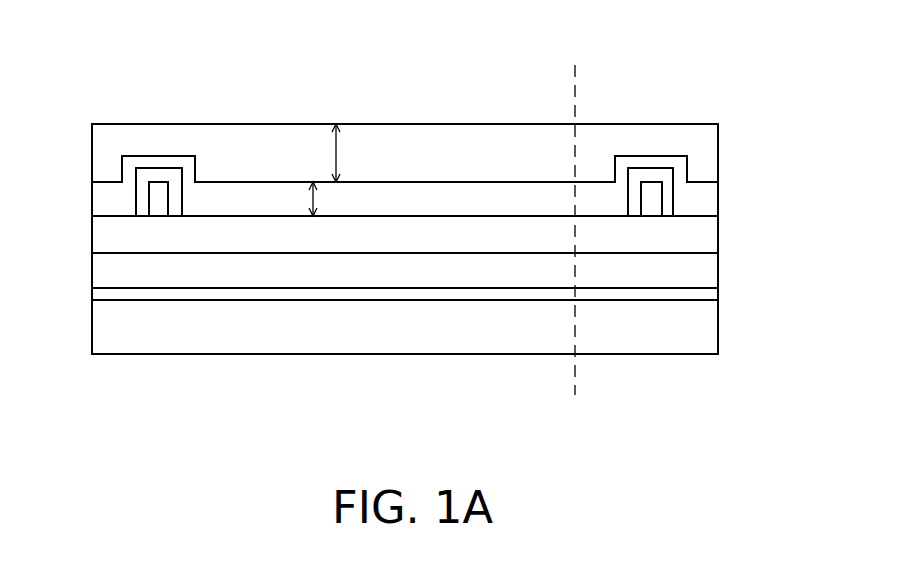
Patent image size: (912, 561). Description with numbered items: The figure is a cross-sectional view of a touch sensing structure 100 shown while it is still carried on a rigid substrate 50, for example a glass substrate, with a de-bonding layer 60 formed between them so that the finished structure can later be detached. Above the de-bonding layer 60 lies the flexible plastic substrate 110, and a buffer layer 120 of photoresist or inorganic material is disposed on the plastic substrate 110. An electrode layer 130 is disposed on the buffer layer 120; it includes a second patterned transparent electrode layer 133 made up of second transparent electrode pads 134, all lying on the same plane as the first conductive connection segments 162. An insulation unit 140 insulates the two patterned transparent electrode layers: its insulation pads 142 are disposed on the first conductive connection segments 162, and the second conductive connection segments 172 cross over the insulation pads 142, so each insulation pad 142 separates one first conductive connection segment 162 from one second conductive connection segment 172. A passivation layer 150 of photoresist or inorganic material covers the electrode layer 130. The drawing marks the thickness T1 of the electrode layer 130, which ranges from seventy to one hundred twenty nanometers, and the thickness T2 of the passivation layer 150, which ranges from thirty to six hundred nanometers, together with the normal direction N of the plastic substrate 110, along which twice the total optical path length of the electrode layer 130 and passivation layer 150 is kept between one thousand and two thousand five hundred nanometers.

The touch sensing structure 100 is at (786, 289).
The rigid substrate 50 is at (693, 331).
The de-bonding layer 60 is at (697, 295).
The plastic substrate 110 is at (693, 271).
The buffer layer 120 is at (693, 234).
The electrode layer 130 is at (80, 195).
The insulation unit 140 is at (650, 175).
The insulation pad 142 is at (160, 178).
The passivation layer 150 is at (702, 140).
The first conductive connection segment 162 is at (160, 205).
The second conductive connection segment 172 is at (143, 162).
The second patterned transparent electrode layer 133 is at (500, 193).
The second transparent electrode pad 134 is at (425, 193).
The thickness of the electrode layer T1 is at (312, 197).
The thickness of the passivation layer T2 is at (336, 152).
The normal direction N is at (577, 95).